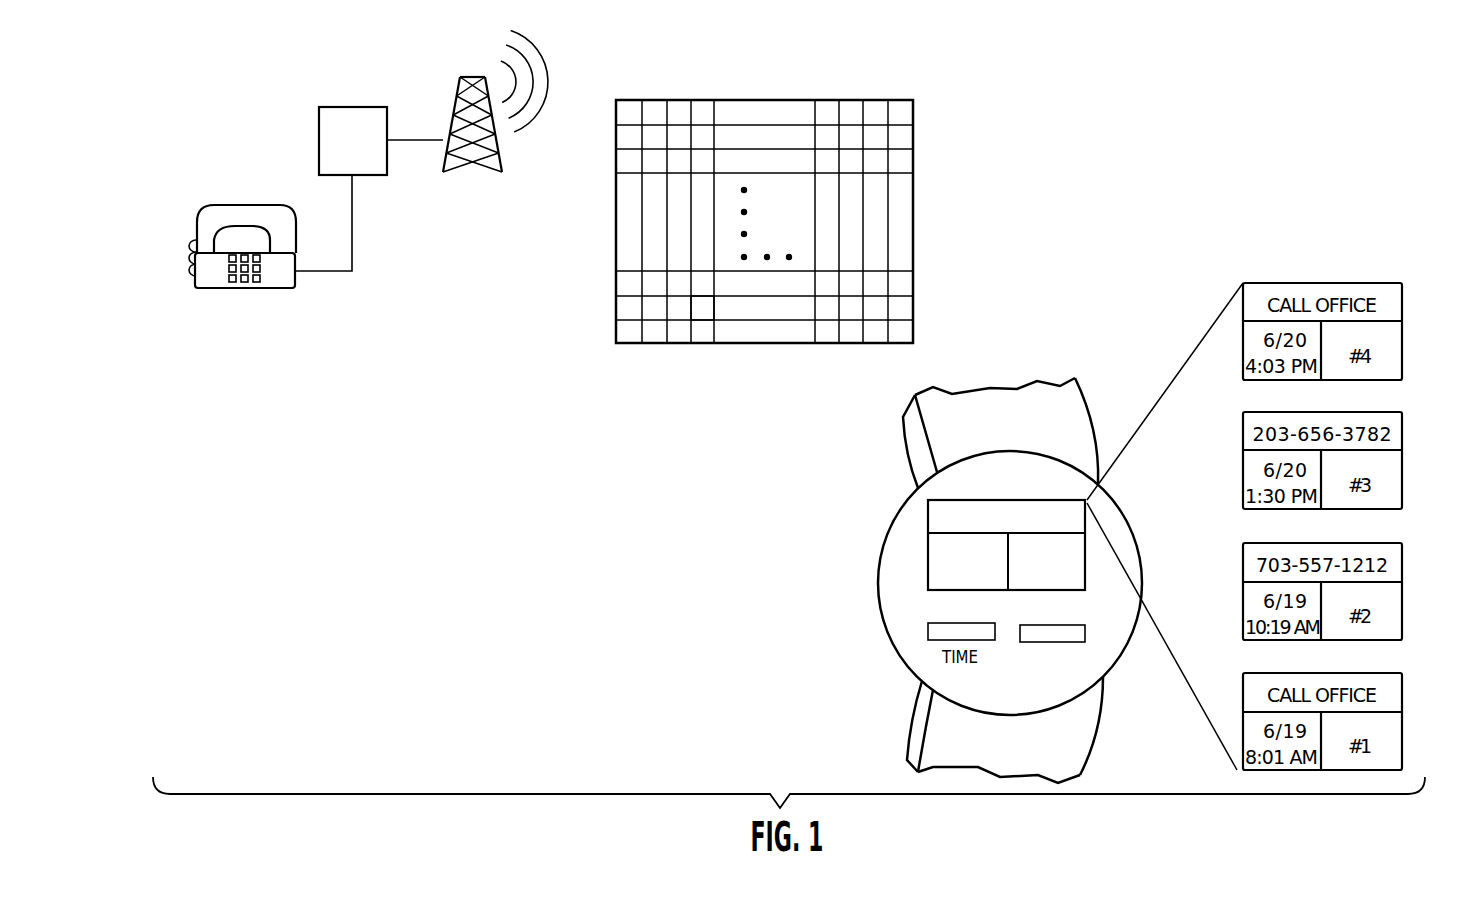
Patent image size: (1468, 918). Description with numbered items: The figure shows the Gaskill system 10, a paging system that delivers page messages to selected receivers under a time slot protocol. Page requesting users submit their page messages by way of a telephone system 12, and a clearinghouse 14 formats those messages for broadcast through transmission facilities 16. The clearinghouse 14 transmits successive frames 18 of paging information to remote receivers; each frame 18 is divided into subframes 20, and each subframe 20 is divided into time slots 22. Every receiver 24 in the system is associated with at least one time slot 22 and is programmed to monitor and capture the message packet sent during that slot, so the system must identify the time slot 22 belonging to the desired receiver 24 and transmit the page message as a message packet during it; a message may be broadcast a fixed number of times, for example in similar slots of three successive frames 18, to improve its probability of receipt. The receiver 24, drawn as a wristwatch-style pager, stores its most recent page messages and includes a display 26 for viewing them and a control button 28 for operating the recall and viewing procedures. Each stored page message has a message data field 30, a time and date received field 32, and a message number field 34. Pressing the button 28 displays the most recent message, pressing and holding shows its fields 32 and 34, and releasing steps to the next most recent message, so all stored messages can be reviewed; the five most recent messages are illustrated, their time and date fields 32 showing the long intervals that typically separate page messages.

The Gaskill system 10 is at (210, 85).
The telephone system 12 is at (215, 283).
The clearinghouse 14 is at (319, 143).
The transmission facilities 16 is at (455, 112).
The frame 18 is at (763, 100).
The subframe 20 is at (614, 285).
The time slot 22 is at (704, 308).
The receiver 24 is at (908, 703).
The display 26 is at (997, 581).
The control button 28 is at (1080, 633).
The message data field 30 is at (942, 517).
The time and date received field 32 is at (940, 548).
The message number field 34 is at (1080, 572).